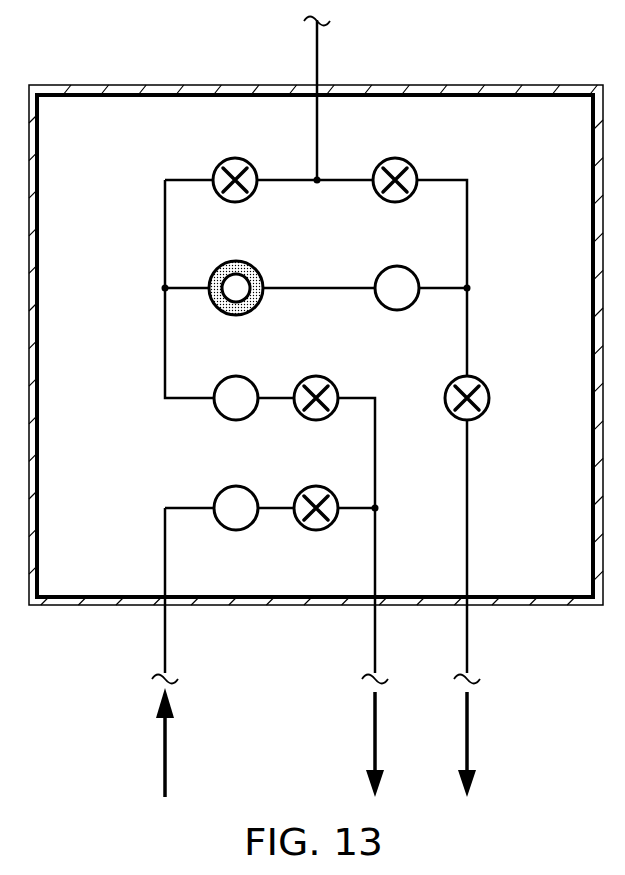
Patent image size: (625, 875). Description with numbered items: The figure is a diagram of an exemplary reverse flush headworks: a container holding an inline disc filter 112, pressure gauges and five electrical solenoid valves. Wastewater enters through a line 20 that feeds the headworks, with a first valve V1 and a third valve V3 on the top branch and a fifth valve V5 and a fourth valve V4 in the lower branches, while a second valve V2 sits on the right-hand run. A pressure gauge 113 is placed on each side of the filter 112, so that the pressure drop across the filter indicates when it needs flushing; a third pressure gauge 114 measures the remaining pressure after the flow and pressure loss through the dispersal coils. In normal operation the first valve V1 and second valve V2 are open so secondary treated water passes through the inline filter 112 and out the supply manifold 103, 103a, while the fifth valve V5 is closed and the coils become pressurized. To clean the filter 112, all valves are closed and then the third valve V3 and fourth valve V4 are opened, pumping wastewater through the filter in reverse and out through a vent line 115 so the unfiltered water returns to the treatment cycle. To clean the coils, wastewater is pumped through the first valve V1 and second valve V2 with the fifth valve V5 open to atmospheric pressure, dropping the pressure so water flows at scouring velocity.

The supply line 20 is at (315, 52).
The supply manifold 103 is at (163, 635).
The supply manifold 103a is at (470, 638).
The inline filter 112 is at (232, 262).
The pressure gauge 113 is at (400, 265).
The third pressure gauge 114 is at (234, 531).
The vent line 115 is at (372, 635).
The first valve V1 is at (235, 158).
The second valve V2 is at (483, 398).
The third valve V3 is at (395, 158).
The fourth valve V4 is at (316, 376).
The fifth valve V5 is at (316, 486).